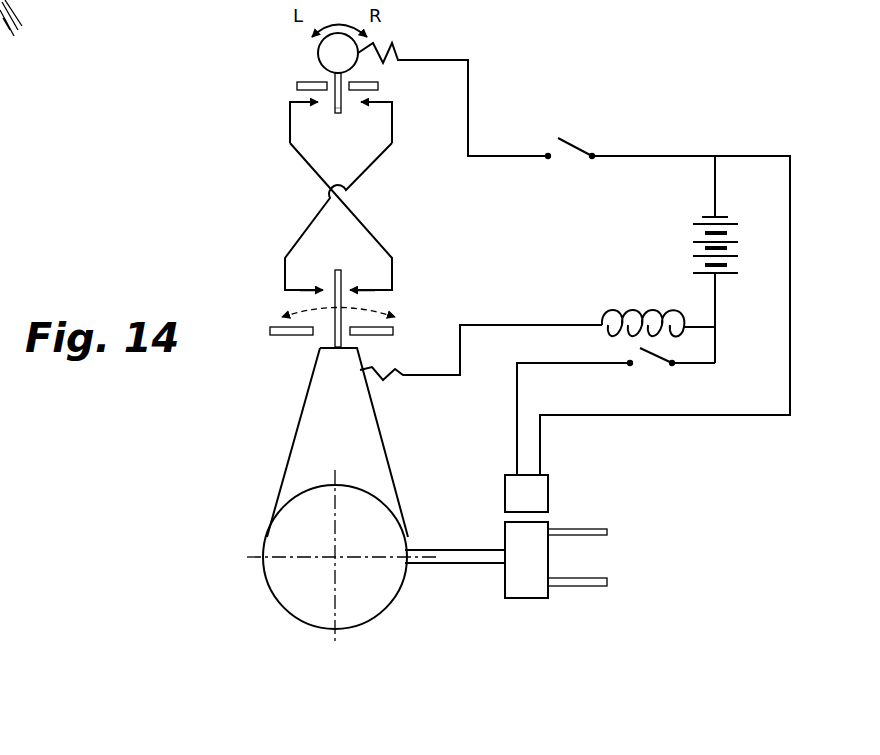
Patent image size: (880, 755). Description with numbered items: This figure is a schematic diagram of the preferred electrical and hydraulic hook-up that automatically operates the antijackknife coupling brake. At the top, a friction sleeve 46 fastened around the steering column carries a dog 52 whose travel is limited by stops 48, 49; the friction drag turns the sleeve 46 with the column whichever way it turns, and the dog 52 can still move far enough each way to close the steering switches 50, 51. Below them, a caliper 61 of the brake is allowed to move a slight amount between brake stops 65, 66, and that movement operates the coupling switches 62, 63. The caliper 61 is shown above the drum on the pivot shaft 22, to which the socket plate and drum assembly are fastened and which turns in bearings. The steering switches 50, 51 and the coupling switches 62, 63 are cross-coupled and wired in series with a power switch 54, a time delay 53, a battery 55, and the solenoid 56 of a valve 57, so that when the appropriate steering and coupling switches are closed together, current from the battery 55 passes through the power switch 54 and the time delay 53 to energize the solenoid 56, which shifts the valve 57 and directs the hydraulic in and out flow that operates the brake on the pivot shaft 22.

The pivot shaft 22 is at (264, 538).
The friction sleeve 46 is at (318, 60).
The stop 48 is at (378, 86).
The stop 49 is at (297, 87).
The switch 50 is at (375, 122).
The switch 51 is at (305, 122).
The dog 52 is at (336, 115).
The time delay 53 is at (603, 318).
The power switch 54 is at (583, 143).
The battery 55 is at (692, 248).
The solenoid 56 is at (540, 500).
The valve 57 is at (513, 540).
The caliper 61 is at (340, 268).
The switch 62 is at (309, 277).
The switch 63 is at (368, 277).
The brake stop 65 is at (290, 336).
The brake stop 66 is at (375, 336).